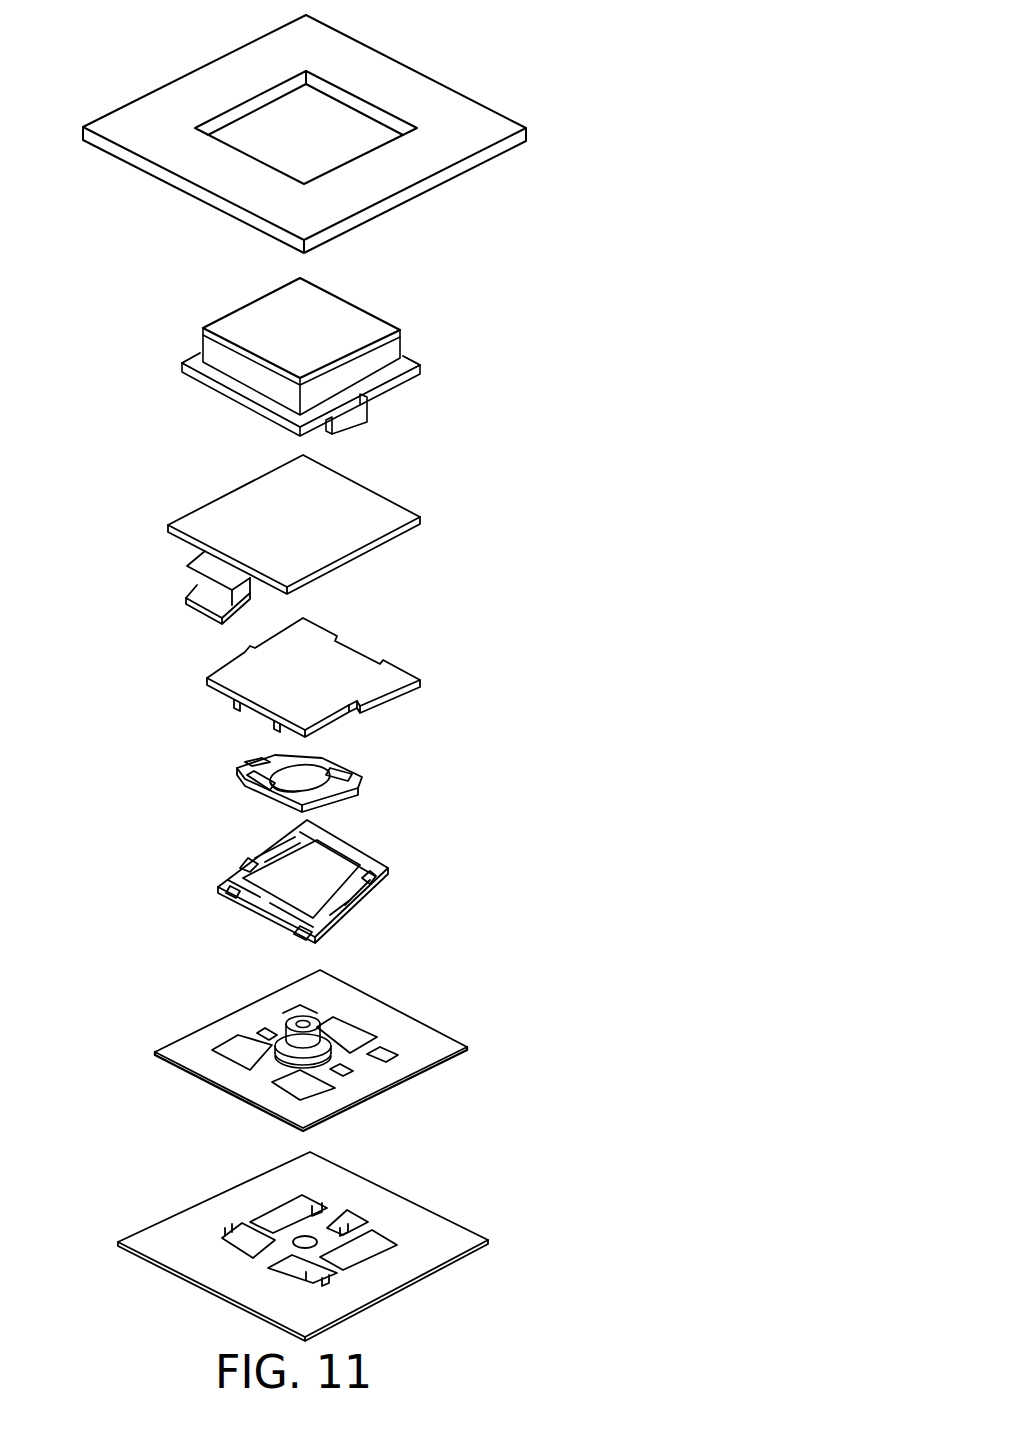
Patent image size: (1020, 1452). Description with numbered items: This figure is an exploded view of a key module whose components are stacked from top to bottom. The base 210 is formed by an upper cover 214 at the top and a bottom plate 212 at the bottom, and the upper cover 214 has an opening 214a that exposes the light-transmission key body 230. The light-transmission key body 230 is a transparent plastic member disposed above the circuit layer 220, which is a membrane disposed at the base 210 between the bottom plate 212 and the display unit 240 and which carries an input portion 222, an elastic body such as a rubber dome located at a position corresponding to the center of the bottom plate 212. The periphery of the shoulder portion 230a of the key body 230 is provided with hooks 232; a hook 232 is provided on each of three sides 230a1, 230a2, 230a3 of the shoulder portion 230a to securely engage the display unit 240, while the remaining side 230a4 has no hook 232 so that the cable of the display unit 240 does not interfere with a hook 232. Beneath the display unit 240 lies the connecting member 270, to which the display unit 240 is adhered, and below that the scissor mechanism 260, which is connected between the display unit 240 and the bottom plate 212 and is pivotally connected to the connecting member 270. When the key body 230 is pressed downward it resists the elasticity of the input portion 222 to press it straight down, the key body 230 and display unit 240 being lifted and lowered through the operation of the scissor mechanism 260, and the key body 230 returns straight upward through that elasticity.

The base 210 is at (752, 592).
The bottom plate 212 is at (430, 1242).
The upper cover 214 is at (463, 135).
The opening 214a is at (300, 142).
The circuit layer 220 is at (380, 1020).
The input portion 222 is at (290, 1030).
The light-transmission key body 230 is at (330, 320).
The shoulder portion 230a is at (412, 365).
The side of the shoulder portion 230a1 is at (390, 383).
The side of the shoulder portion 230a2 is at (405, 353).
The side of the shoulder portion 230a3 is at (190, 357).
The side of the shoulder portion 230a4 is at (228, 392).
The hook 232 is at (350, 417).
The display unit 240 is at (395, 522).
The scissor mechanism 260 is at (418, 813).
The connecting member 270 is at (398, 680).